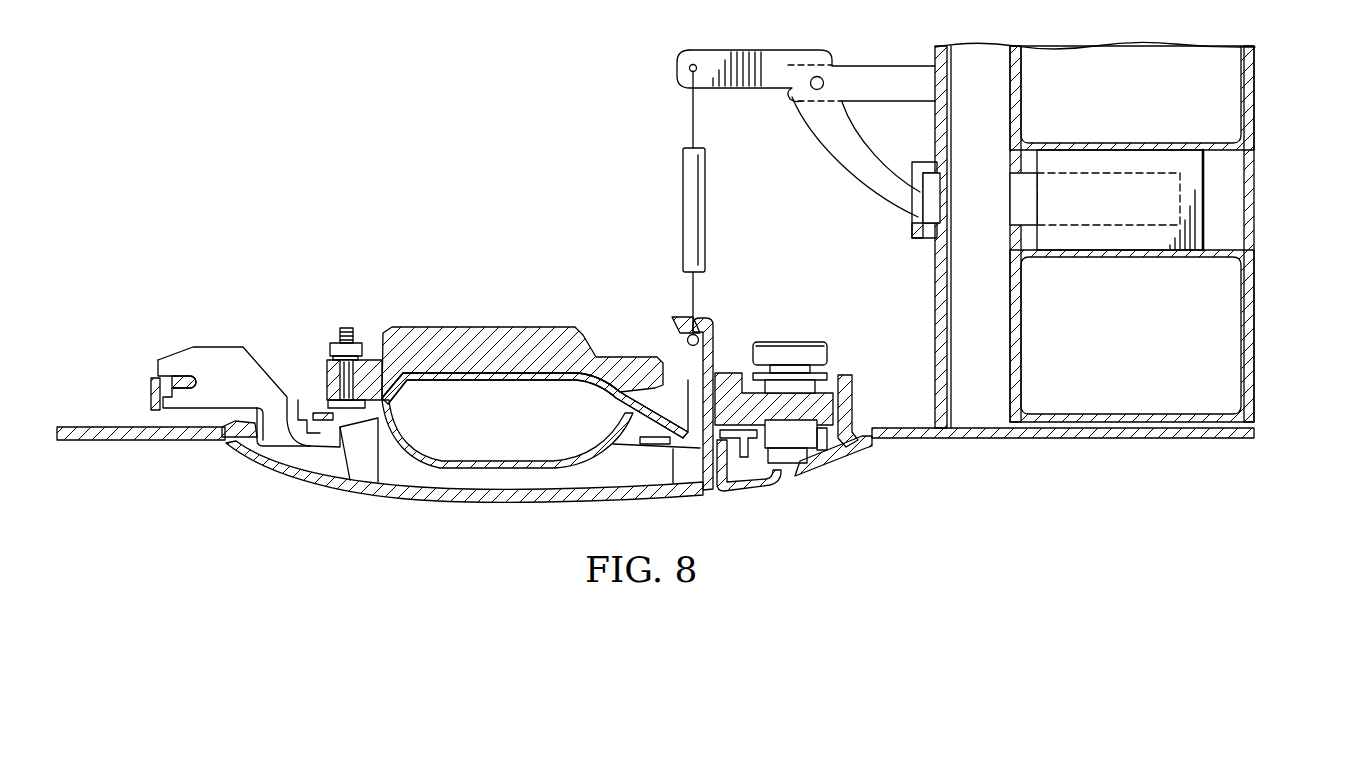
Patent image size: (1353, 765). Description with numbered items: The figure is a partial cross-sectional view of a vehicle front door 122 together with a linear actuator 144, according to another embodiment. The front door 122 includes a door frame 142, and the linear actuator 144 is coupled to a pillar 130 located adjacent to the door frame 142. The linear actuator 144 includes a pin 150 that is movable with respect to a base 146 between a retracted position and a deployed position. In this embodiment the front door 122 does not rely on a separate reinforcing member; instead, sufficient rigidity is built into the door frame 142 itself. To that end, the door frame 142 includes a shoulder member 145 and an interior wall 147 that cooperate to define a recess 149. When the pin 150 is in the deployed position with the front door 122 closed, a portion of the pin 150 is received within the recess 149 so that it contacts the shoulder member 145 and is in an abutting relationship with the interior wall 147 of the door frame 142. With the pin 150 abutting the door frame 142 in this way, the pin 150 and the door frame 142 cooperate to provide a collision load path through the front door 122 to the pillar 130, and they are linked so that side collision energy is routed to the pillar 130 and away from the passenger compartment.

The front door 122 is at (284, 572).
The pillar 130 is at (1268, 396).
The door frame 142 is at (960, 410).
The linear actuator 144 is at (1212, 198).
The shoulder member 145 is at (930, 232).
The base 146 is at (1177, 162).
The interior wall 147 is at (921, 198).
The recess 149 is at (946, 199).
The pin 150 is at (1022, 198).